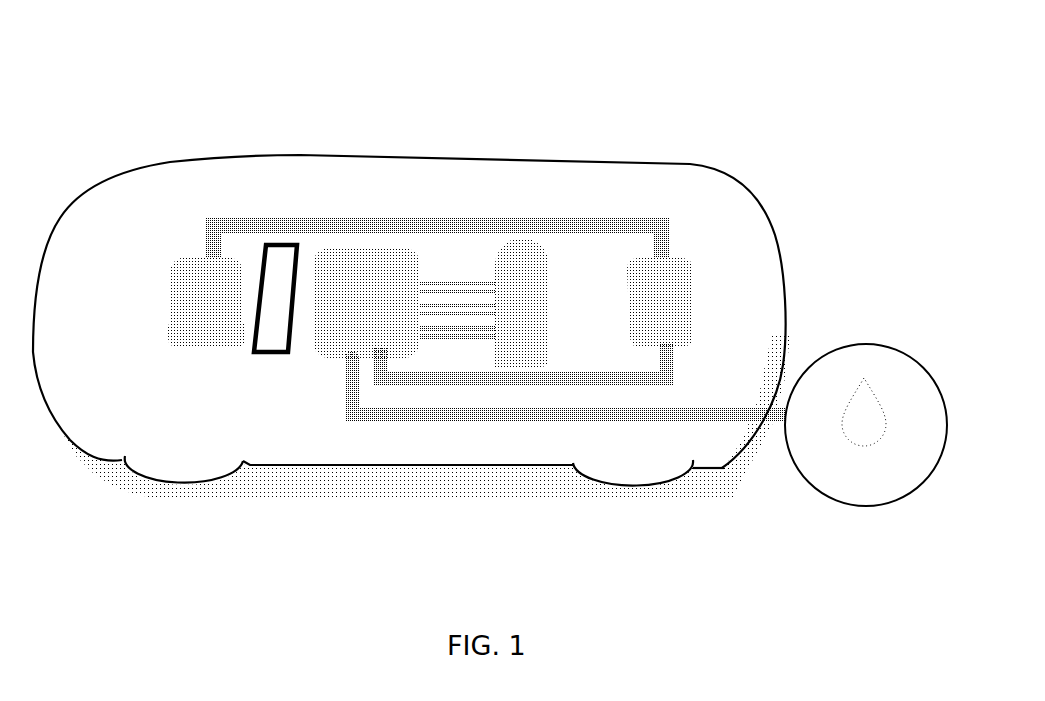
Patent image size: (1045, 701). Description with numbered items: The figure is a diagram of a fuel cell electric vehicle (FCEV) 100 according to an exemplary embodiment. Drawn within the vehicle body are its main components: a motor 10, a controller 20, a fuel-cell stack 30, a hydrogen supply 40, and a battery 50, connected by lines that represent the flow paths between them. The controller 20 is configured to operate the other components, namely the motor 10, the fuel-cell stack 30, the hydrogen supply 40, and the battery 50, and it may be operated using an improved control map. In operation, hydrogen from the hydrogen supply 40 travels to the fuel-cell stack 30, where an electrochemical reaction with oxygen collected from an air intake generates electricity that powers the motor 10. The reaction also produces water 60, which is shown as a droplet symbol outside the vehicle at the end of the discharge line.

The fuel cell electric vehicle 100 is at (729, 113).
The motor 10 is at (207, 313).
The controller 20 is at (272, 313).
The fuel-cell stack 30 is at (345, 313).
The hydrogen supply 40 is at (523, 310).
The battery 50 is at (665, 307).
The water 60 is at (872, 435).